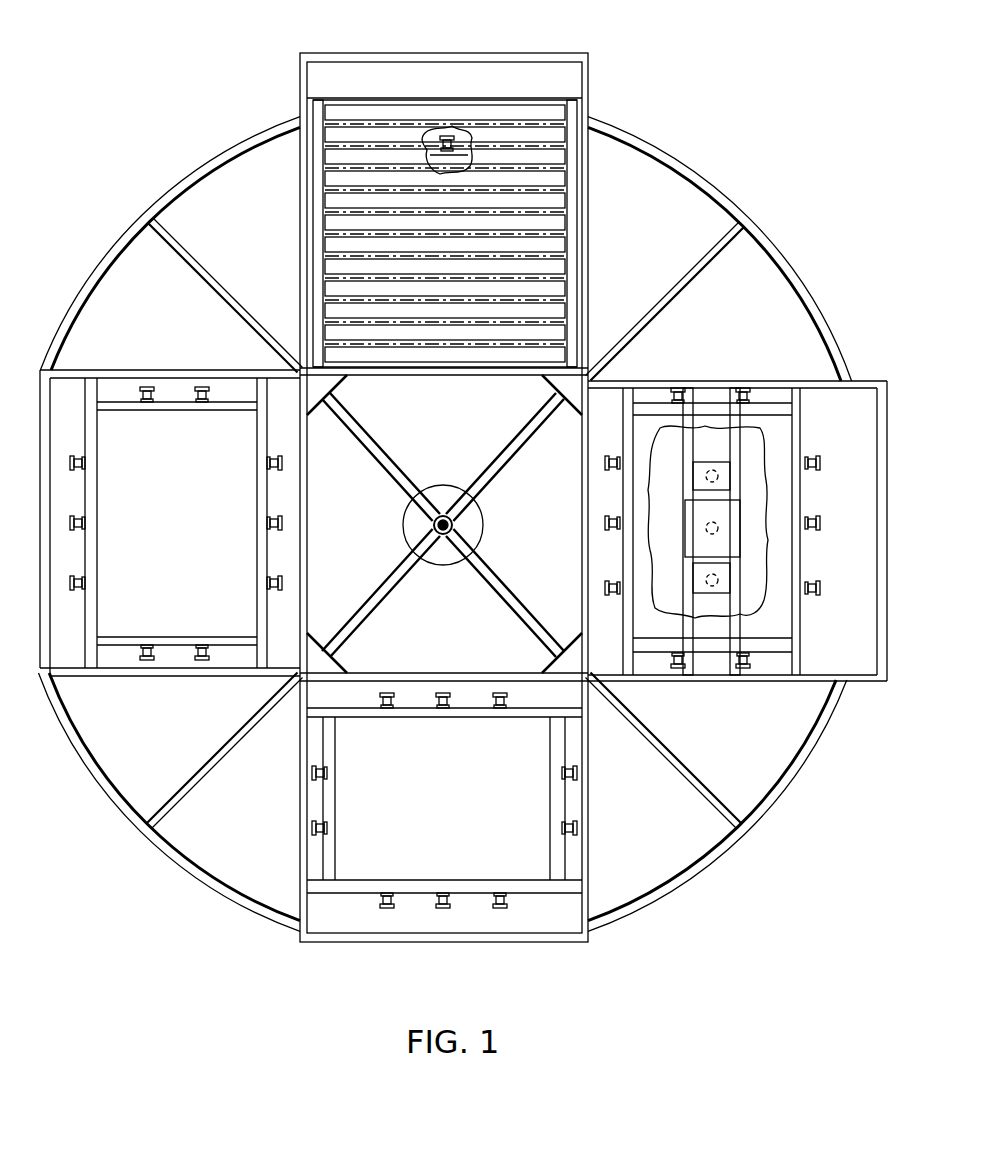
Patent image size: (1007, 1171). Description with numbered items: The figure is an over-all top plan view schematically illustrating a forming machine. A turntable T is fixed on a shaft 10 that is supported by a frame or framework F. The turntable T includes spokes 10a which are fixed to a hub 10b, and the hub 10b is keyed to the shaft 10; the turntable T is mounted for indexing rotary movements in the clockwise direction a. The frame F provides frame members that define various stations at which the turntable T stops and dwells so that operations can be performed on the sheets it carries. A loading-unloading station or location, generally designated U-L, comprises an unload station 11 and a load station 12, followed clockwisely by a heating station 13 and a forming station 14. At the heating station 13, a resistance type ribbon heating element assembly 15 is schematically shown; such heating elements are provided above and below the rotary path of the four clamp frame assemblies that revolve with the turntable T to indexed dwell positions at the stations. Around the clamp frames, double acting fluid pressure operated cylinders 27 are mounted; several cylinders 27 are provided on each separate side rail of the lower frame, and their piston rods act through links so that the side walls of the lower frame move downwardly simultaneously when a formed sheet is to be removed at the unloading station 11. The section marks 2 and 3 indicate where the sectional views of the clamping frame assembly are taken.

The shaft 10 is at (453, 525).
The spokes 10a is at (235, 312).
The hub 10b is at (445, 516).
The unload station 11 is at (405, 946).
The load station 12 is at (138, 677).
The heating station 13 is at (293, 200).
The forming station 14 is at (725, 681).
The resistance type ribbon heating element assembly 15 is at (325, 270).
The double acting fluid pressure operated cylinder 27 is at (458, 150).
The frame F is at (592, 228).
The turntable T is at (800, 268).
The clockwise direction a is at (780, 330).
The loading-unloading station U-L is at (248, 772).
The section line 2 is at (300, 22).
The section line 3 is at (886, 381).